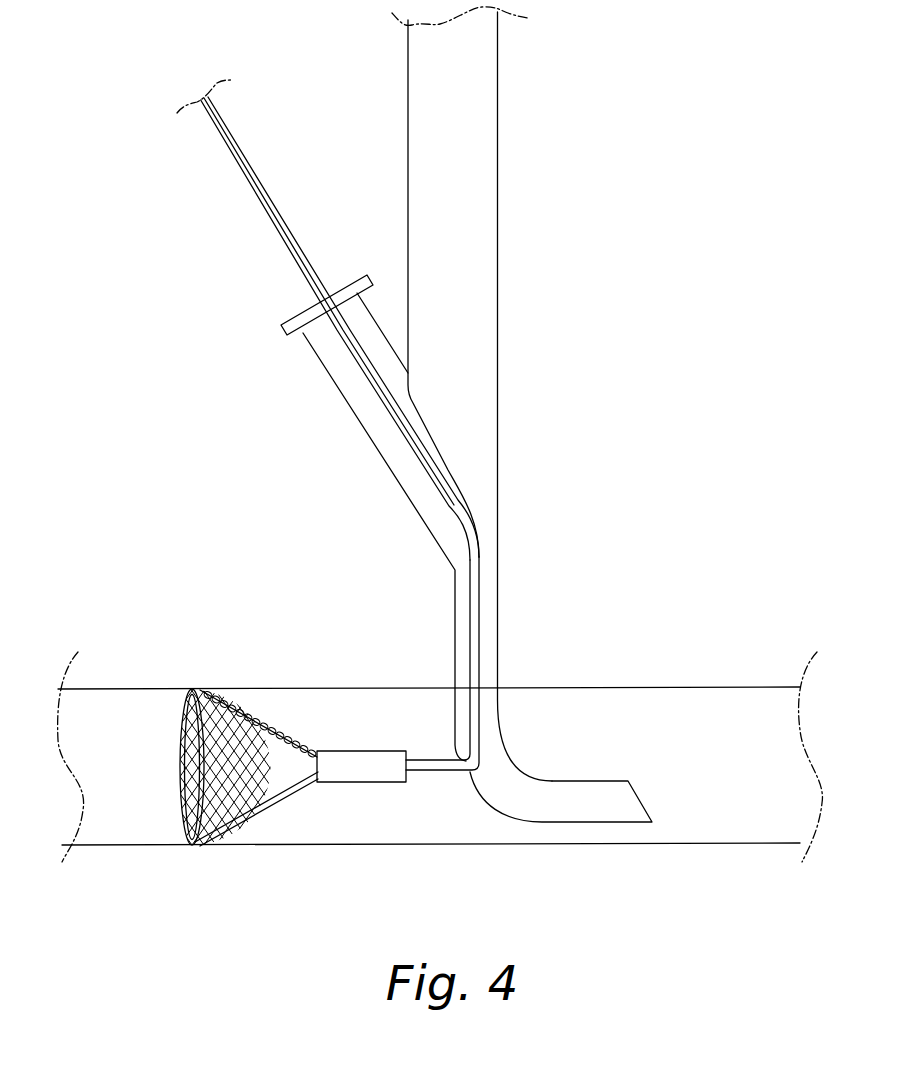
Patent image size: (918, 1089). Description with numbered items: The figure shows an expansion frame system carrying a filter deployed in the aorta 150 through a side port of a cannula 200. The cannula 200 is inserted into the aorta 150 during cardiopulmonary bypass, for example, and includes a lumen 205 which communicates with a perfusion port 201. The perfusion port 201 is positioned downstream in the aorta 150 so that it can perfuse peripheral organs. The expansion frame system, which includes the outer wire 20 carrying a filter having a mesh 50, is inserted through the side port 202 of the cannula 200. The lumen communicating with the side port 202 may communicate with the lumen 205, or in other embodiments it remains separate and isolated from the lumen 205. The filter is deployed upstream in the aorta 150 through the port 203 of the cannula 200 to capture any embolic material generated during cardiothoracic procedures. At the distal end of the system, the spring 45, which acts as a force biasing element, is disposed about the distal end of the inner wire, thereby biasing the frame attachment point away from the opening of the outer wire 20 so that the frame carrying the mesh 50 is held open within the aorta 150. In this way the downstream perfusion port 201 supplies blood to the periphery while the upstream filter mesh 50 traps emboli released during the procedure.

The outer wire 20 is at (276, 798).
The spring 45 is at (287, 732).
The mesh 50 is at (241, 820).
The aorta 150 is at (122, 688).
The cannula 200 is at (514, 198).
The perfusion port 201 is at (638, 797).
The side port 202 is at (303, 312).
The port 203 is at (470, 773).
The lumen 205 is at (485, 302).